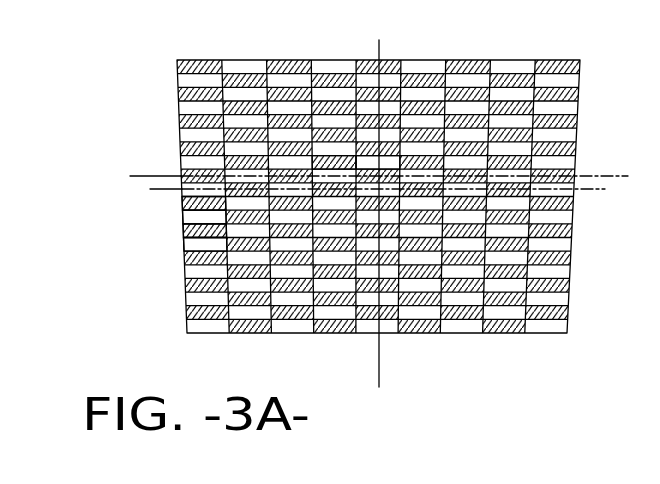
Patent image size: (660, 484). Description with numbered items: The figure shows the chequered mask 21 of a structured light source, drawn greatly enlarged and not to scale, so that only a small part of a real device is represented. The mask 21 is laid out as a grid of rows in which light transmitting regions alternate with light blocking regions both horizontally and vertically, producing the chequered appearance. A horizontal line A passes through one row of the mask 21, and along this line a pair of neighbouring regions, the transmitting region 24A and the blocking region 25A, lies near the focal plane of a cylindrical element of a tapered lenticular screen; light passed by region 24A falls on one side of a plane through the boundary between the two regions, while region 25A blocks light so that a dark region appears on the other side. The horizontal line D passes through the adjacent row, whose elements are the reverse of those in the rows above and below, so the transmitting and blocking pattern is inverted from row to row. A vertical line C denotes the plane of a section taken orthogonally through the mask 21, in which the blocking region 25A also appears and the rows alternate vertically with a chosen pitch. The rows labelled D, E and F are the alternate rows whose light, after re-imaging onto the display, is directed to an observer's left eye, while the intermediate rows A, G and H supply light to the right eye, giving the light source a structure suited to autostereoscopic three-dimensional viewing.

The mask 21 is at (498, 59).
The light transmitting region 24A is at (343, 168).
The blocking region 25A is at (364, 168).
The row G of mask G is at (183, 202).
The row E of mask E is at (195, 218).
The row H of mask H is at (183, 235).
The row F of mask F is at (195, 245).
The line AA' / row A of mask A is at (384, 177).
The line DD' / row D of mask D is at (380, 192).
The line CC' C is at (394, 199).